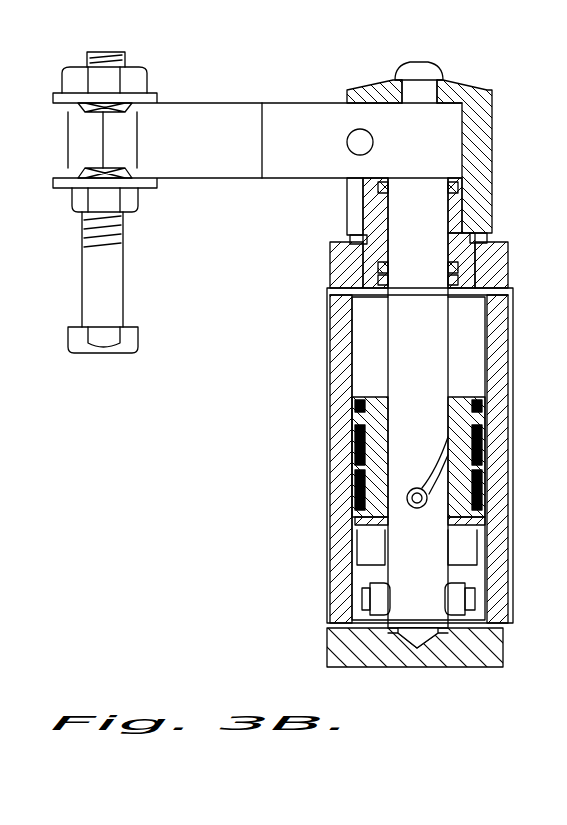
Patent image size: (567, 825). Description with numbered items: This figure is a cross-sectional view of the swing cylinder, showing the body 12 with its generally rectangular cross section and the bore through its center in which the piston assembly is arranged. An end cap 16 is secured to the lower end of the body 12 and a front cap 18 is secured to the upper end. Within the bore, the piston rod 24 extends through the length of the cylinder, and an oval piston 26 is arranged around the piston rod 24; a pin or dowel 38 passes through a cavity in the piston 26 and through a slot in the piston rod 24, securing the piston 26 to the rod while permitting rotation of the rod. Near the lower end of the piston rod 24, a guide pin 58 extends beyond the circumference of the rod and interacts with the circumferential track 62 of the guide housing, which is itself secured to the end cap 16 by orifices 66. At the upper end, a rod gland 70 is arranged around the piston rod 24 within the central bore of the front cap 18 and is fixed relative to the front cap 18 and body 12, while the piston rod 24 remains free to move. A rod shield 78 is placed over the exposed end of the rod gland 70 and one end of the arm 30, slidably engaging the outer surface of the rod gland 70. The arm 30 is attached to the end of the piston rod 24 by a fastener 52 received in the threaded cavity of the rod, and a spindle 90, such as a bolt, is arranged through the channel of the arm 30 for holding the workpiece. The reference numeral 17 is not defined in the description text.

The body 12 is at (446, 455).
The end cap 16 is at (340, 643).
The cylinder bore 17 is at (342, 505).
The front cap 18 is at (345, 262).
The piston rod 24 is at (408, 335).
The piston 26 is at (355, 468).
The arm 30 is at (212, 112).
The pin, dowel, or other cylindrical object 38 is at (412, 508).
The fastener 52 is at (425, 65).
The guide pin 58 is at (468, 597).
The circumferential track 62 is at (370, 546).
The orifices 66 is at (467, 480).
The rod gland 70 is at (467, 210).
The rod shield 78 is at (478, 128).
The spindle 90 is at (112, 262).